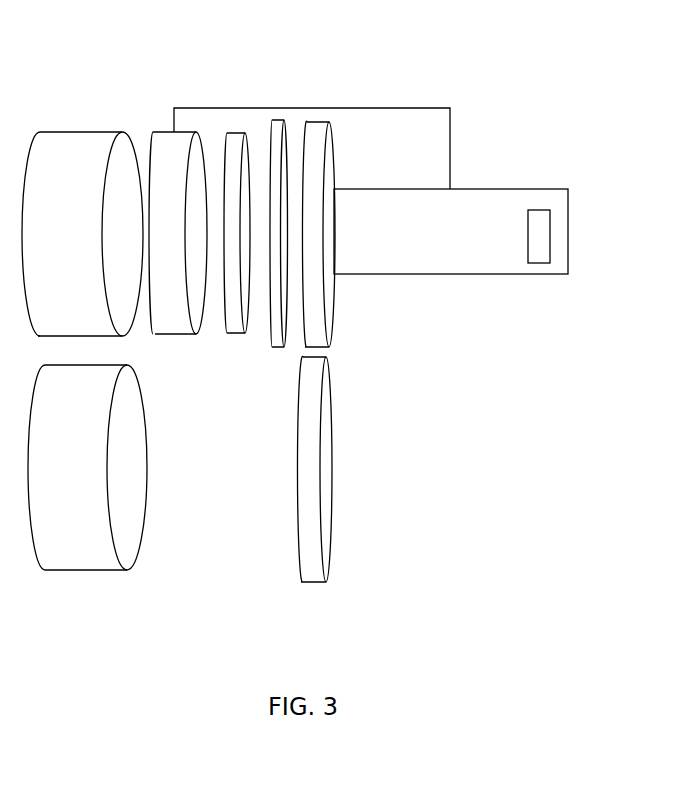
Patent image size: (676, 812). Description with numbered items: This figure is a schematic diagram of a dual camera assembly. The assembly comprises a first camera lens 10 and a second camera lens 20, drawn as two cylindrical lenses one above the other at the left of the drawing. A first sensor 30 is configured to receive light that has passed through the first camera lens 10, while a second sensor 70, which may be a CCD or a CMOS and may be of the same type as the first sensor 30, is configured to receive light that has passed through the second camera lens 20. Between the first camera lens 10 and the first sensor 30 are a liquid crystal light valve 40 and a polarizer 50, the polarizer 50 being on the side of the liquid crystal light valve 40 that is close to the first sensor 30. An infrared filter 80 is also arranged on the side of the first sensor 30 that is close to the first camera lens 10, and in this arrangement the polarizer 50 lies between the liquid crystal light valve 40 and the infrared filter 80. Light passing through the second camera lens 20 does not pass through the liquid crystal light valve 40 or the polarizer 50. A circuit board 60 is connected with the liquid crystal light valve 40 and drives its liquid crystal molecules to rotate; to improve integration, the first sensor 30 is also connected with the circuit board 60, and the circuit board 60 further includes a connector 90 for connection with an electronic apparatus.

The first camera lens 10 is at (73, 143).
The second camera lens 20 is at (82, 543).
The first sensor 30 is at (310, 297).
The liquid crystal light valve 40 is at (170, 318).
The polarizer 50 is at (235, 318).
The circuit board 60 is at (465, 258).
The second sensor 70 is at (312, 552).
The infrared filter 80 is at (277, 325).
The connector 90 is at (533, 252).